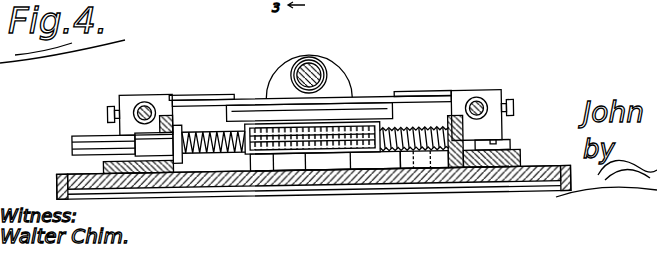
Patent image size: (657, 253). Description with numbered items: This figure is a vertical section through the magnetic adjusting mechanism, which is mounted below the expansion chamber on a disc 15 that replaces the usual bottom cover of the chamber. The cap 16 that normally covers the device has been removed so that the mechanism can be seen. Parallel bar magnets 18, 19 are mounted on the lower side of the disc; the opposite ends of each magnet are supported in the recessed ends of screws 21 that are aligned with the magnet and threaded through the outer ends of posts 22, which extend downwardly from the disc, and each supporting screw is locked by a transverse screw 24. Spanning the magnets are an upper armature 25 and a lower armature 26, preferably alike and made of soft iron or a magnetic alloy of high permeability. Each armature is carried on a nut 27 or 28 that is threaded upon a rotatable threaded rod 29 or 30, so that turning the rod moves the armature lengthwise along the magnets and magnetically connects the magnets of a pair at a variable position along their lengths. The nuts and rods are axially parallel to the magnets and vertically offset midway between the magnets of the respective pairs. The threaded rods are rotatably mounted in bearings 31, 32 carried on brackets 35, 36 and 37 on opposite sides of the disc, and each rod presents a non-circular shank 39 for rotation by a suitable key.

The disc 15 is at (546, 169).
The cap 16 is at (363, 108).
The bar magnet 18 is at (148, 101).
The bar magnet 19 is at (480, 100).
The screw 21 is at (233, 98).
The post 22 is at (122, 96).
The transverse screw 24 is at (108, 111).
The upper armature 25 is at (306, 158).
The lower armature 26 is at (352, 88).
The nut 27 is at (257, 152).
The nut 28 is at (319, 66).
The threaded rod 29 is at (203, 155).
The threaded rod 30 is at (295, 70).
The bearing 31 is at (156, 158).
The bearing 32 is at (458, 175).
The bracket 35 is at (127, 172).
The bracket 36 is at (483, 178).
The bracket 37 is at (339, 164).
The non-circular shank 39 is at (74, 134).